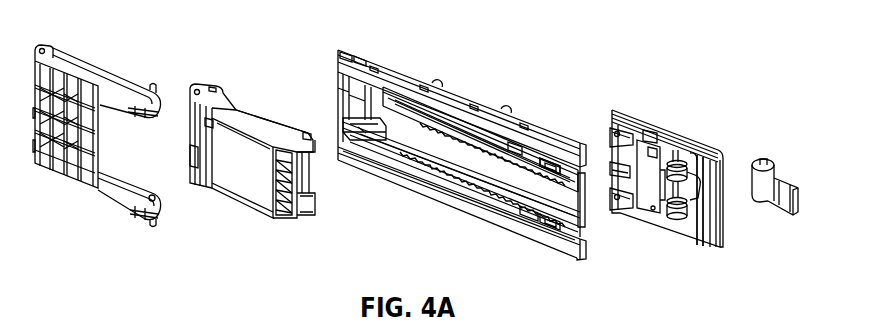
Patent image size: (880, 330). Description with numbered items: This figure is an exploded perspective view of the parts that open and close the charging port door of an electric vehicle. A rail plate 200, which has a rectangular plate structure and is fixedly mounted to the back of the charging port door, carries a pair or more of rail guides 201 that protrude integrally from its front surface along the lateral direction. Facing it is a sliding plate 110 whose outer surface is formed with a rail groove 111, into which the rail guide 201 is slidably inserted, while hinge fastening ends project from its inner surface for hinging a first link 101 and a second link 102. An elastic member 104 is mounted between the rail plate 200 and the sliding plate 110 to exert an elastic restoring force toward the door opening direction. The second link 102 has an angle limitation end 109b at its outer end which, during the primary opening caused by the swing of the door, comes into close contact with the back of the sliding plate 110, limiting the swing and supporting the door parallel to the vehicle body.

The first link 101 is at (85, 192).
The second link 102 is at (234, 203).
The angle limitation end 109b is at (280, 136).
The rail plate 200 is at (453, 83).
The rail guide 201 is at (527, 153).
The sliding plate 110 is at (650, 113).
The rail groove 111 is at (700, 157).
The elastic member 104 is at (770, 197).